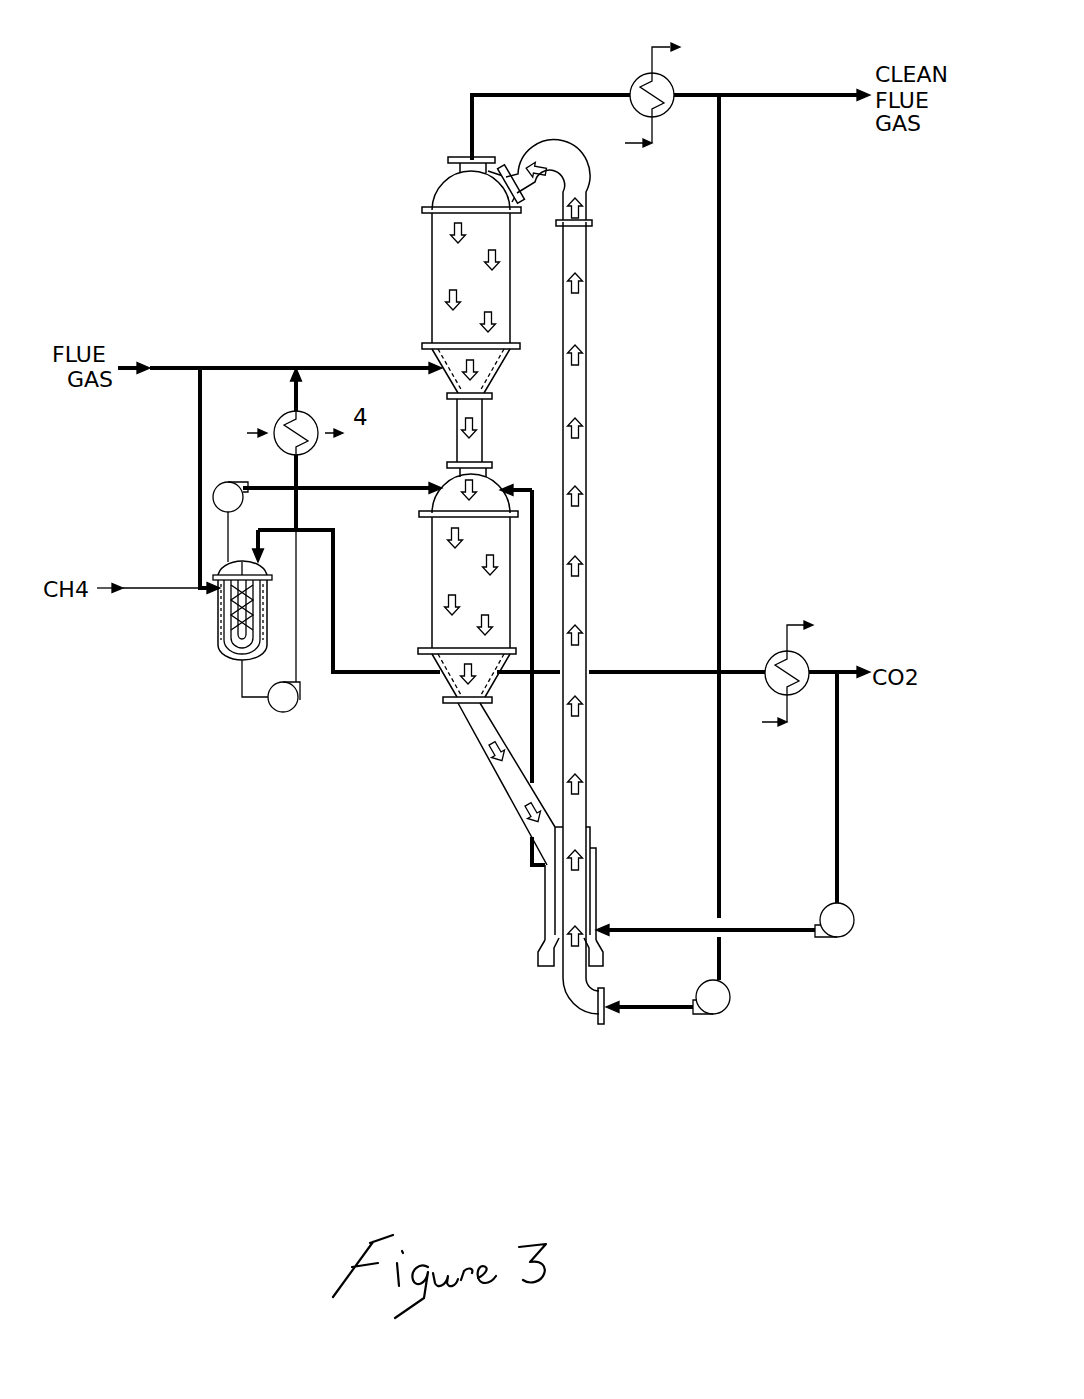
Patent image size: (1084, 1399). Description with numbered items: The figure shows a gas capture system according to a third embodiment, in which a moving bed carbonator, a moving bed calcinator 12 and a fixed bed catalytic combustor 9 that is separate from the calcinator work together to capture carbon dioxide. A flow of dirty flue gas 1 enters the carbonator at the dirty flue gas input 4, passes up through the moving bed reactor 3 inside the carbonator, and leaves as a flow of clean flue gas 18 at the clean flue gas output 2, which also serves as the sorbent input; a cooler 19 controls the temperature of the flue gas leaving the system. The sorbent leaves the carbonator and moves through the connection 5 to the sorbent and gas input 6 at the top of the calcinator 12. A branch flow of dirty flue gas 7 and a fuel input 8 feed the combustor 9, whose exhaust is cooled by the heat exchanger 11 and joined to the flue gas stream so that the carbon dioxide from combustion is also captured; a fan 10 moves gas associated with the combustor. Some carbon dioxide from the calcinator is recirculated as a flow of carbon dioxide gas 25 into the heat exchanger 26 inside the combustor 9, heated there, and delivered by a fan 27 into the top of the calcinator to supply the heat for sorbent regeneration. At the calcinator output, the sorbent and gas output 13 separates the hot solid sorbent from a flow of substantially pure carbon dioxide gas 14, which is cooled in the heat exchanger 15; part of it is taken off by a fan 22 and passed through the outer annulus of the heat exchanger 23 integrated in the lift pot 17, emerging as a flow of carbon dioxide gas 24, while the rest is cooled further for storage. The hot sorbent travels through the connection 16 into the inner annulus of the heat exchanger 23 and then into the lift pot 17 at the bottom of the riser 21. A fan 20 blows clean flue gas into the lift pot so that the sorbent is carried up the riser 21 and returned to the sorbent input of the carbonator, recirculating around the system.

The flow of dirty flue gas 1 is at (248, 368).
The sorbent input to a carbonator and clean flue gas output 2 is at (458, 195).
The moving bed reactor inside a carbonator 3 is at (460, 282).
The sorbent output from a carbonator and dirty flue gas input 4 is at (463, 365).
The connection between a carbonator and a calcinator 5 is at (342, 480).
The sorbent and gas input to a calcinator 6 is at (403, 468).
The flow of dirty flue gas 7 is at (197, 388).
The fuel input to a combustor 8 is at (147, 583).
The combustor 9 is at (220, 643).
The fan 10 is at (283, 698).
The heat exchanger or gas turbine 11 is at (282, 418).
The calcinator 12 is at (460, 593).
The sorbent and gas output 13 is at (460, 668).
The flow of substantially pure carbon dioxide gas 14 is at (640, 685).
The heat exchanger 15 is at (808, 662).
The connection between a calcinator and a lift pot 16 is at (492, 740).
The lift pot 17 is at (543, 960).
The flow of clean flue gas 18 is at (530, 93).
The heat exchanger 19 is at (640, 78).
The fan 20 is at (723, 997).
The riser 21 is at (577, 503).
The fan 22 is at (852, 908).
The heat exchanger 23 is at (590, 872).
The flow of carbon dioxide gas 24 is at (525, 867).
The flow of carbon dioxide gas 25 is at (333, 610).
The heat exchanger 26 is at (220, 607).
The fan 27 is at (222, 498).